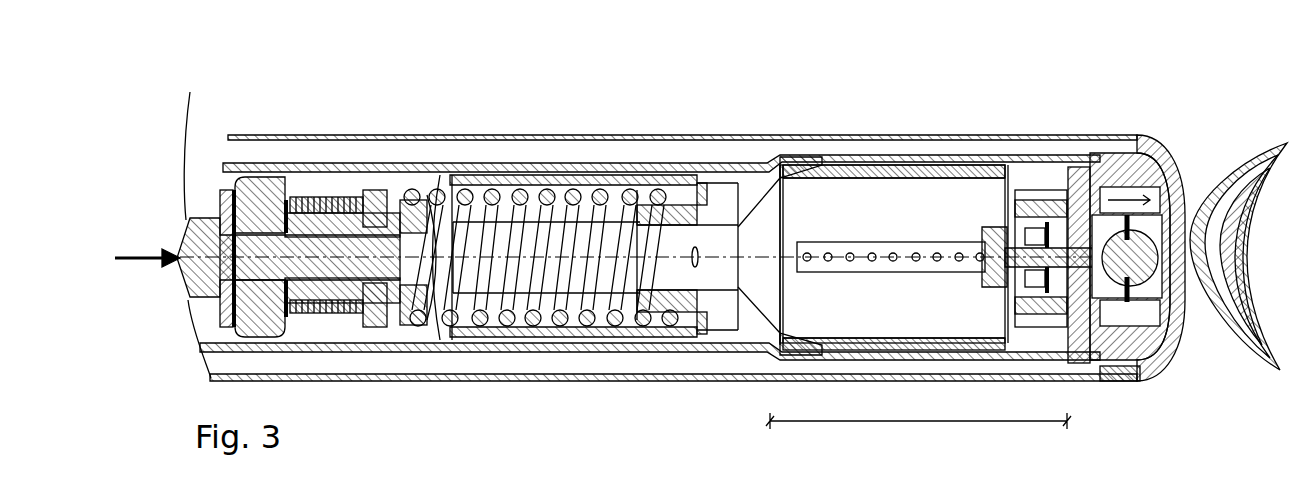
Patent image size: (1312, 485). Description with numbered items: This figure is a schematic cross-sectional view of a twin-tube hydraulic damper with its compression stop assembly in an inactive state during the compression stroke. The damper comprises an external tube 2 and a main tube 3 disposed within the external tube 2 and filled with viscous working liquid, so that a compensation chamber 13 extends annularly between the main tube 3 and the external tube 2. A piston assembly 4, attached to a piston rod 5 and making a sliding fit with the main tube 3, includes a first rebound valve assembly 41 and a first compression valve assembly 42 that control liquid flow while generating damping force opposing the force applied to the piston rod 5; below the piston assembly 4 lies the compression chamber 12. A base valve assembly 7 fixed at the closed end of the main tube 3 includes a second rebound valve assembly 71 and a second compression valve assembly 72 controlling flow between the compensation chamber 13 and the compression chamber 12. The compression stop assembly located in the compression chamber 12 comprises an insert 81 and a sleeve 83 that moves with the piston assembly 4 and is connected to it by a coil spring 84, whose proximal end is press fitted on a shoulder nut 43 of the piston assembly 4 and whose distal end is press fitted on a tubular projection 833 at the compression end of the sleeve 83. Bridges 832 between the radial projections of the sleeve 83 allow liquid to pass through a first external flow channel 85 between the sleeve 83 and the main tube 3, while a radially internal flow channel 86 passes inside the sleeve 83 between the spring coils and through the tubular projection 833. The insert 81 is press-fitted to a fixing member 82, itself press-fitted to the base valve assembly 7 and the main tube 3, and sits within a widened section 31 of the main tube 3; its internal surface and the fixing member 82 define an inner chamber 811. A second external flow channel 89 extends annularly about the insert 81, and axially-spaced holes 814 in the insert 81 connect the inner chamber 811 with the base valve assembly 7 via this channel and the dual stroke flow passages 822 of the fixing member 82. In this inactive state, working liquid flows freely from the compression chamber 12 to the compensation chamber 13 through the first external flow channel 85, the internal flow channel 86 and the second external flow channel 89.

The external tube 2 is at (403, 137).
The compression chamber 12 is at (357, 183).
The piston rod 5 is at (288, 222).
The first compression valve assembly 42 is at (222, 170).
The main tube 3 is at (282, 175).
The piston assembly 4 is at (323, 193).
The first rebound valve assembly 41 is at (330, 200).
The shoulder nut 43 is at (403, 193).
The bridges 832 is at (462, 180).
The sleeve 83 is at (533, 177).
The coil spring 84 is at (573, 187).
The first external flow channel 85 is at (600, 172).
The tubular projection 833 is at (683, 190).
The internal flow channel 86 is at (752, 207).
The second external flow channel 89 is at (827, 160).
The inner chamber 811 is at (938, 200).
The axially-spaced holes 814 is at (917, 253).
The insert 81 is at (993, 170).
The compensation chamber 13 is at (1013, 150).
The dual stroke flow passages 822 is at (1062, 170).
The fixing member 82 is at (1087, 157).
The second rebound valve assembly 71 is at (1130, 167).
The second compression valve assembly 72 is at (1135, 378).
The base valve assembly 7 is at (1162, 157).
The widened section 31 is at (918, 431).